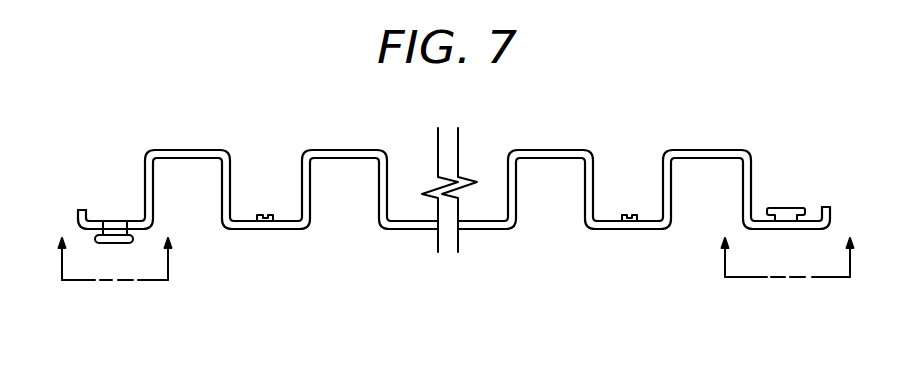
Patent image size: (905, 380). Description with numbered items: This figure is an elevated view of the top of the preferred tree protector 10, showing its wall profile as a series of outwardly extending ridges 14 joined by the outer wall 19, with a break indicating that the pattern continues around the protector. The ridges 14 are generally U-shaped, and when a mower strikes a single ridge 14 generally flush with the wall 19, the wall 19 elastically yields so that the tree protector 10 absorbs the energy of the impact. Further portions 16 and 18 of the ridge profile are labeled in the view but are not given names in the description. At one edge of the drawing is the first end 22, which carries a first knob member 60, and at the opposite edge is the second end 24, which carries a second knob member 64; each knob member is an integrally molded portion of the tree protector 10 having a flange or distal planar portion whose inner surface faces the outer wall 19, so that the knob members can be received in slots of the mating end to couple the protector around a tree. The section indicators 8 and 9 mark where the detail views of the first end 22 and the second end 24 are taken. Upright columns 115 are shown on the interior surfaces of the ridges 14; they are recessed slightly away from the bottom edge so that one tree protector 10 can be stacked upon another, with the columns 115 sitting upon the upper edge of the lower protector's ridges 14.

The tree protector 10 is at (454, 191).
The second end 24 is at (152, 183).
The ridge 14 is at (280, 261).
The outer wall 19 is at (256, 231).
The second raised rib section 18 is at (355, 186).
The top web of rib 16 is at (338, 162).
The first end 22 is at (740, 193).
The upright columns 115 is at (263, 215).
The second knob member 64 is at (108, 243).
The first knob member 60 is at (788, 207).
The section line 9- 9 is at (112, 273).
The section line 8- 8 is at (784, 273).